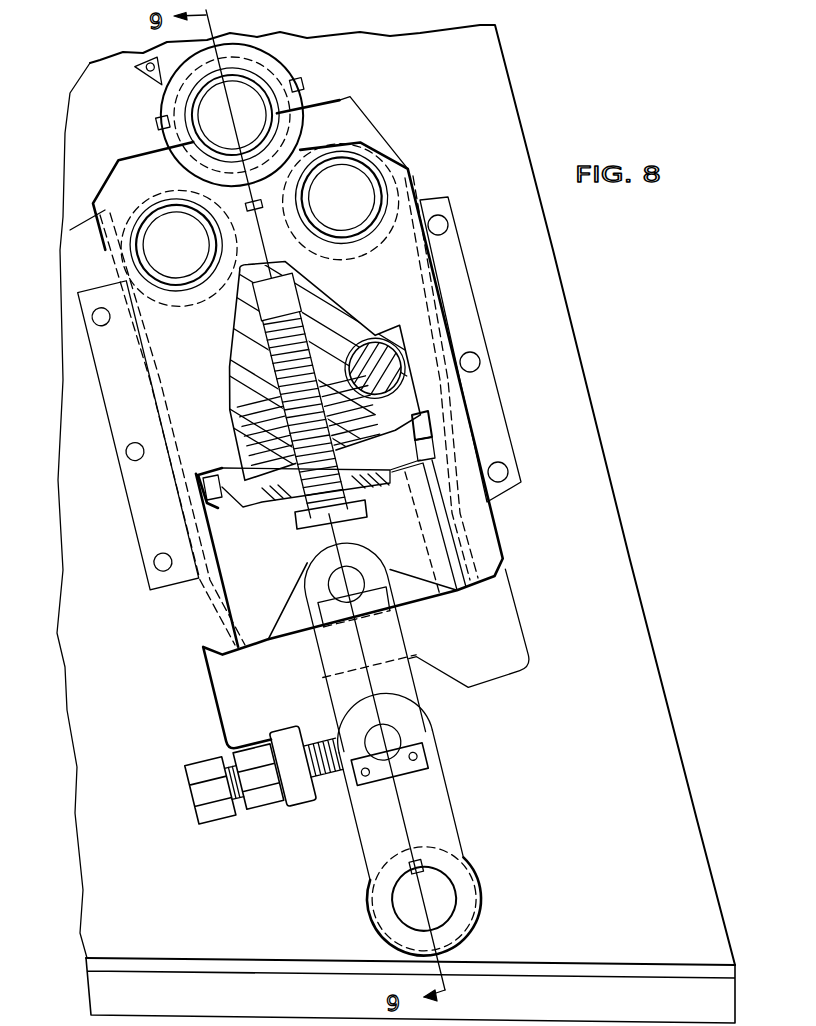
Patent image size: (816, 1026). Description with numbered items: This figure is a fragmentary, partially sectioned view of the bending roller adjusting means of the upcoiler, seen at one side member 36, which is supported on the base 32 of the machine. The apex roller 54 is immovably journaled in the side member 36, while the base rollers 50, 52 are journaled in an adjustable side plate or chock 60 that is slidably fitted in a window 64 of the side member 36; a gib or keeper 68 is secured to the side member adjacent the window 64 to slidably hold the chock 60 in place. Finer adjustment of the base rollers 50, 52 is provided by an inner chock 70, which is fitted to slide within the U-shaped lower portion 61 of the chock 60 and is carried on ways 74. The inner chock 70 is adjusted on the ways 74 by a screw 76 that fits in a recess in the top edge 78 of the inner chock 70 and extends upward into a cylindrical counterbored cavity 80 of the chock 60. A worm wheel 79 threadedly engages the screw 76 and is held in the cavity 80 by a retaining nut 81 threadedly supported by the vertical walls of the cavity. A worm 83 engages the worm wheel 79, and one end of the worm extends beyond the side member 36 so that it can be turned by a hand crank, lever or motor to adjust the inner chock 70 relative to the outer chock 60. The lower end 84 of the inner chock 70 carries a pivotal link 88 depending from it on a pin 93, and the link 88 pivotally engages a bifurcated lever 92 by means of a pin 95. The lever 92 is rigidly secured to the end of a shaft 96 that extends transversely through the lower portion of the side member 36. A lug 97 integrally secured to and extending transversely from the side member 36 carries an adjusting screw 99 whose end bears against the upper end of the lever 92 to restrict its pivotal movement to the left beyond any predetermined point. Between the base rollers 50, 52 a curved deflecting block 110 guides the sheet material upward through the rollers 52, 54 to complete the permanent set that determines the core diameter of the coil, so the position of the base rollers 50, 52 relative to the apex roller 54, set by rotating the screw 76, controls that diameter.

The base 32 is at (100, 986).
The side member 36 is at (590, 436).
The base roller 50 is at (118, 166).
The base roller 52 is at (375, 140).
The apex roller 54 is at (186, 158).
The chock 60 is at (442, 268).
The U-shaped lower portion 61 is at (432, 436).
The window 64 is at (68, 220).
The gib 68 is at (452, 221).
The inner chock 70 is at (430, 541).
The way 74 is at (436, 450).
The screw 76 is at (262, 342).
The top edge 78 is at (275, 490).
The worm wheel 79 is at (265, 395).
The cylindrical counterbored cavity 80 is at (298, 287).
The retaining nut 81 is at (265, 447).
The worm 83 is at (400, 350).
The lower end 84 is at (283, 620).
The pivotal link 88 is at (390, 639).
The bifurcated lever 92 is at (440, 794).
The pin 93 is at (337, 581).
The pin 95 is at (395, 738).
The shaft 96 is at (445, 897).
The lug 97 is at (290, 795).
The adjusting screw 99 is at (226, 815).
The curved deflecting block 110 is at (303, 213).